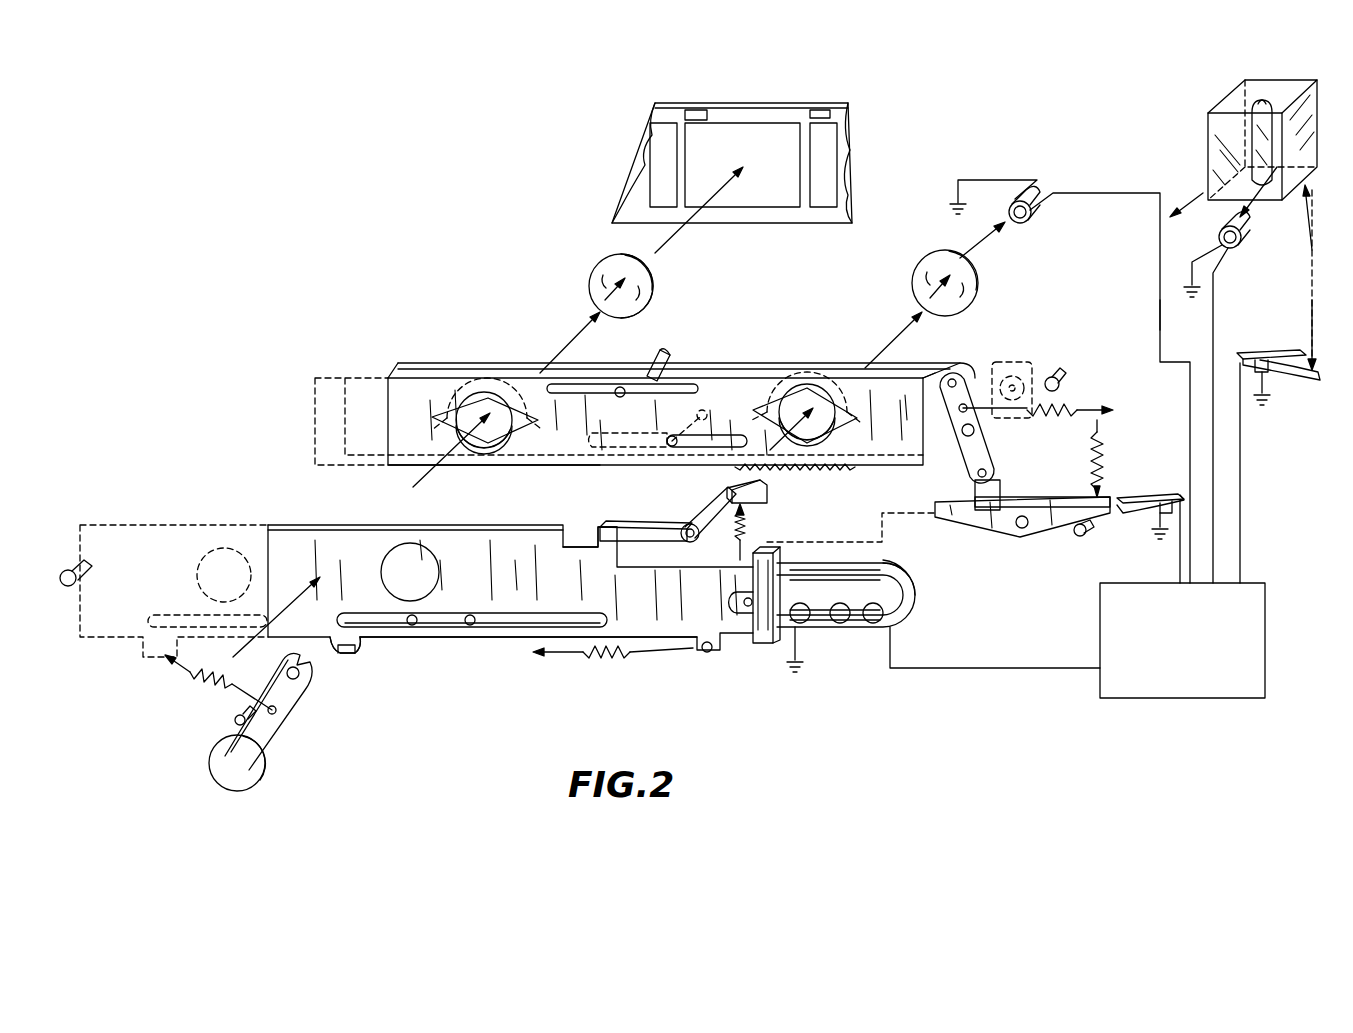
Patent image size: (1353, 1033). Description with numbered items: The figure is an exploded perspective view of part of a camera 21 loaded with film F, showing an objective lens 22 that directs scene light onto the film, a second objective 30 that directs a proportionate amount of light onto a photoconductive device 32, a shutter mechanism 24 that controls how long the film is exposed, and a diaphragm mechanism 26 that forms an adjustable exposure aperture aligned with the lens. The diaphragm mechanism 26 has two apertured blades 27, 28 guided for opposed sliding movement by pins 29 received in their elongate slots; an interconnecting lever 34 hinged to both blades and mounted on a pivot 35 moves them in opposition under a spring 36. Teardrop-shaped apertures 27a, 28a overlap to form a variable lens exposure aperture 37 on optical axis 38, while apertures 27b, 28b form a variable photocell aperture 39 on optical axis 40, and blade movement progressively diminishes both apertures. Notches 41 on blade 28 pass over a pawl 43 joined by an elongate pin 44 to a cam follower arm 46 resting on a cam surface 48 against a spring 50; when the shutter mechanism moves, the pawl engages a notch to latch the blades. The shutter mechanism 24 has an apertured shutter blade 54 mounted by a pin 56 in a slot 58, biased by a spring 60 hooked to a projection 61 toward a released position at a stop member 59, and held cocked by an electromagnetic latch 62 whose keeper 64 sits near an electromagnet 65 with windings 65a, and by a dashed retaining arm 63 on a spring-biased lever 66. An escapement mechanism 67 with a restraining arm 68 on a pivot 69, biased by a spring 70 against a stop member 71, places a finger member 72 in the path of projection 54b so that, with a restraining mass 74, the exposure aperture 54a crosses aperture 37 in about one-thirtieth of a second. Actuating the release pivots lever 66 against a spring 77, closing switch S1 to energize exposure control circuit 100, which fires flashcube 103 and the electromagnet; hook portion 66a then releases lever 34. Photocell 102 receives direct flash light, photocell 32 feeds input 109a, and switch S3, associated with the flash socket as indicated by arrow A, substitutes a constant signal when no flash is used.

The camera 21 is at (202, 418).
The film F is at (781, 110).
The objective lens 22 is at (653, 283).
The objective 30 is at (978, 278).
The photoconductive device 32 is at (1040, 224).
The input 109a is at (1158, 292).
The flashcube 103 is at (1210, 92).
The second photocell 102 is at (1244, 252).
The arrow A is at (1305, 265).
The normally closed switch S3 is at (1278, 352).
The diaphragm mechanism 26 is at (384, 352).
The apertured blade 27 is at (460, 358).
The apertured blade 28 is at (386, 474).
The teardrop-shaped aperture 27a is at (450, 402).
The teardrop-shaped aperture 27b is at (768, 402).
The teardrop-shaped aperture 28a is at (522, 432).
The teardrop-shaped aperture 28b is at (838, 432).
The variable lens exposure aperture 37 is at (487, 402).
The variable photocell aperture 39 is at (808, 405).
The optical axis 38 is at (570, 320).
The optical axis 40 is at (900, 312).
The pins 29 is at (665, 430).
The serrations or notches 41 is at (825, 478).
The interconnecting lever 34 is at (995, 458).
The pivot 35 is at (975, 430).
The spring 36 is at (1070, 405).
The spring 77 is at (1088, 455).
The normally opened switch S1 is at (1158, 490).
The spring-biased lever 66 is at (1035, 530).
The hook portion 66a is at (965, 495).
The retaining arm 63 is at (888, 528).
The shutter mechanism 24 is at (274, 515).
The shutter blade 54 is at (512, 640).
The exposure aperture 54a is at (413, 545).
The projection 54b is at (365, 650).
The pin 56 is at (416, 628).
The slot 58 is at (475, 630).
The cam surface 48 is at (588, 540).
The cam follower arm 46 is at (655, 528).
The elongate pin 44 is at (710, 503).
The pawl 43 is at (768, 490).
The spring 50 is at (752, 523).
The electromagnetic latch 62 is at (915, 579).
The electromagnetic keeper 64 is at (765, 645).
The electromagnet 65 is at (890, 605).
The coil windings 65a is at (825, 640).
The spring 60 is at (620, 660).
The projection 61 is at (712, 660).
The stop member 59 is at (72, 560).
The finger member 72 is at (275, 660).
The escapement mechanism 67 is at (246, 727).
The restraining mass 74 is at (250, 768).
The spring-biased restraining arm 68 is at (270, 728).
The pivot 69 is at (300, 675).
The spring 70 is at (190, 672).
The stop member 71 is at (235, 720).
The exposure control circuit 100 is at (1265, 647).